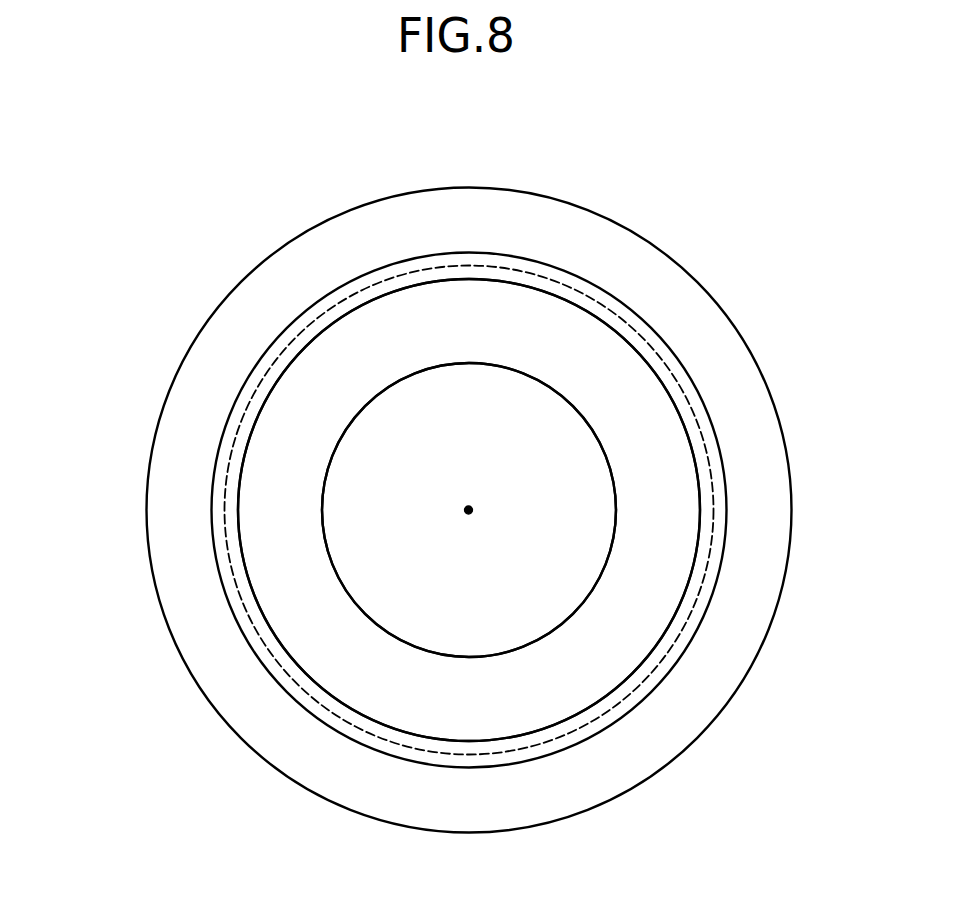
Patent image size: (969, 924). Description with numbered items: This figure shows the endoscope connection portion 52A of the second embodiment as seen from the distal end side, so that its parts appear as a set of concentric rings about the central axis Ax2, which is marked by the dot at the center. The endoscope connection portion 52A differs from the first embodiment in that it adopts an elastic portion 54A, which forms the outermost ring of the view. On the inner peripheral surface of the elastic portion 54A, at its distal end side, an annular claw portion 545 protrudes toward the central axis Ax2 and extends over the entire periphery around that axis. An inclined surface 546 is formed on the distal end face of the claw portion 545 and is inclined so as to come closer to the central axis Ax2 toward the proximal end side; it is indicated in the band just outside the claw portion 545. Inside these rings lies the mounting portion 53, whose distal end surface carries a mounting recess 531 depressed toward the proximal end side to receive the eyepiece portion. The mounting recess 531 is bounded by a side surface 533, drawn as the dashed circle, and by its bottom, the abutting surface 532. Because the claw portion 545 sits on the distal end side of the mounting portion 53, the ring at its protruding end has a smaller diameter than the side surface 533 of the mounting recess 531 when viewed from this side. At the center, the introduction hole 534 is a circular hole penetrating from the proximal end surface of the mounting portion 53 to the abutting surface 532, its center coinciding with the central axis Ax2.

The endoscope connection portion 52A is at (193, 130).
The elastic portion 54A is at (282, 276).
The mounting portion 53 is at (359, 334).
The mounting recess 531 is at (745, 130).
The side surface 533 is at (580, 293).
The abutting surface 532 is at (605, 350).
The claw portion 545 is at (292, 363).
The inclined surface 546 is at (245, 397).
The introduction hole 534 is at (607, 464).
The central axis Ax2 is at (470, 512).